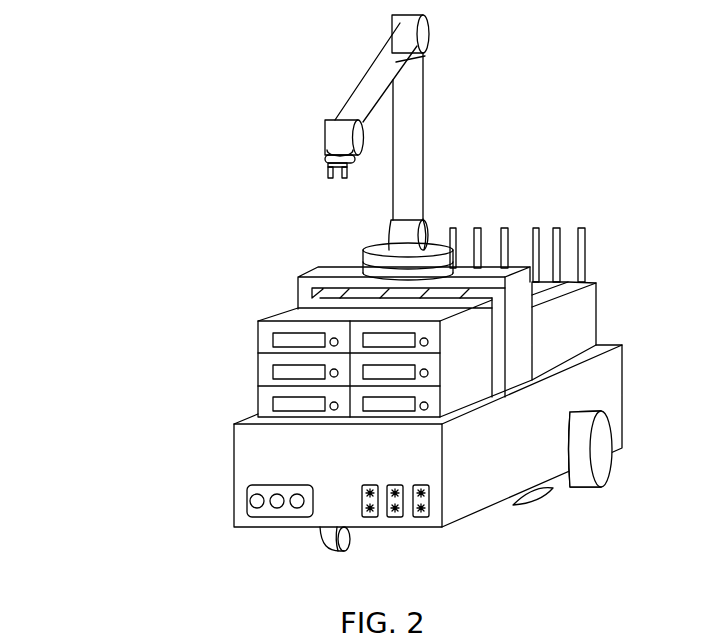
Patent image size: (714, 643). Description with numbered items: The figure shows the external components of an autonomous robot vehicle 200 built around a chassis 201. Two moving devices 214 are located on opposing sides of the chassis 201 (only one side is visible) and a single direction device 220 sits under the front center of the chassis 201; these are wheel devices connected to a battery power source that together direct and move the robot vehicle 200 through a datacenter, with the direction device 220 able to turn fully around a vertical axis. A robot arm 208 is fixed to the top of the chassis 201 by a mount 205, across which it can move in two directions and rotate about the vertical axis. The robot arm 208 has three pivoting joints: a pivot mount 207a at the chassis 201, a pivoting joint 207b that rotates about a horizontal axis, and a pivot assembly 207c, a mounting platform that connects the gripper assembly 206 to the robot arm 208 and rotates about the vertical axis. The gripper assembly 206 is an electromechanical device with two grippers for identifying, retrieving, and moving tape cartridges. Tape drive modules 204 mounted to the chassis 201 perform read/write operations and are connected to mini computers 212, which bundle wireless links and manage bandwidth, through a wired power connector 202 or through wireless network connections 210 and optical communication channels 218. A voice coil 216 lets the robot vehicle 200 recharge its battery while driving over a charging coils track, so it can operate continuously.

The robot vehicle 200 is at (181, 66).
The chassis 201 is at (462, 487).
The power connector 202 is at (247, 493).
The tape drive modules 204 is at (258, 403).
The mount 205 is at (298, 283).
The gripper assembly 206 is at (325, 158).
The pivot mount 207a is at (450, 227).
The pivoting joint 207b is at (435, 30).
The pivot assembly 207c is at (325, 130).
The robot arm 208 is at (412, 108).
The wireless network connections 210 is at (453, 228).
The mini computers 212 is at (585, 308).
The moving devices 214 is at (602, 465).
The voice coil 216 is at (552, 493).
The optical communication channels 218 is at (424, 517).
The direction device 220 is at (334, 553).